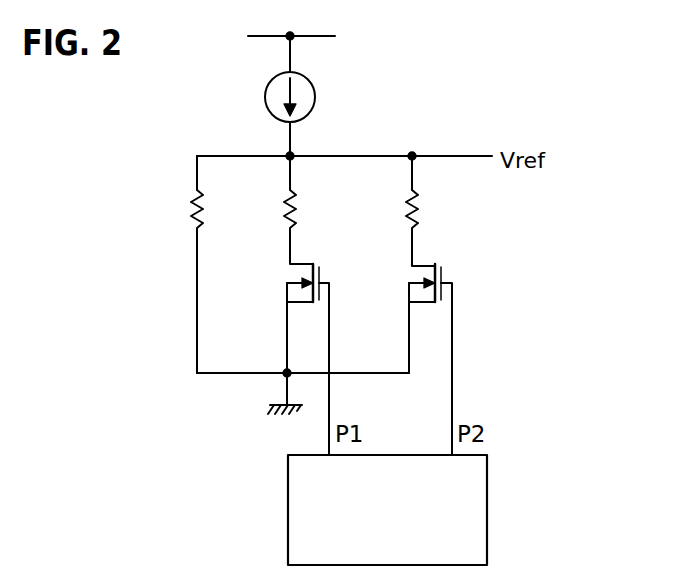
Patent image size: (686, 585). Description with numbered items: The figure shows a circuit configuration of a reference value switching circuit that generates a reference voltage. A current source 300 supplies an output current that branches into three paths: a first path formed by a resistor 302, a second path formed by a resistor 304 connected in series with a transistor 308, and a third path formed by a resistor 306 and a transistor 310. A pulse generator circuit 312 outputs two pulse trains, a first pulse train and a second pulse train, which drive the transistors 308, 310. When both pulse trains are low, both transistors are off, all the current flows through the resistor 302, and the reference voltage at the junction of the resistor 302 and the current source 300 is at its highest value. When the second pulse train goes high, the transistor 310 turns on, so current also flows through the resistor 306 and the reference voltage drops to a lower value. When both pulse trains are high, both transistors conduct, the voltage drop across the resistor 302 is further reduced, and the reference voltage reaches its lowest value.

The current source 300 is at (314, 85).
The resistor 302 is at (190, 205).
The resistor 304 is at (328, 210).
The resistor 306 is at (420, 215).
The transistor 308 is at (347, 250).
The transistor 310 is at (470, 252).
The pulse generator circuit 312 is at (487, 473).